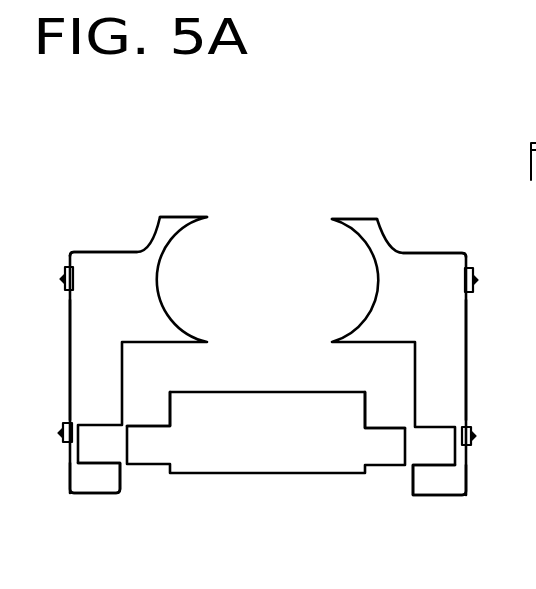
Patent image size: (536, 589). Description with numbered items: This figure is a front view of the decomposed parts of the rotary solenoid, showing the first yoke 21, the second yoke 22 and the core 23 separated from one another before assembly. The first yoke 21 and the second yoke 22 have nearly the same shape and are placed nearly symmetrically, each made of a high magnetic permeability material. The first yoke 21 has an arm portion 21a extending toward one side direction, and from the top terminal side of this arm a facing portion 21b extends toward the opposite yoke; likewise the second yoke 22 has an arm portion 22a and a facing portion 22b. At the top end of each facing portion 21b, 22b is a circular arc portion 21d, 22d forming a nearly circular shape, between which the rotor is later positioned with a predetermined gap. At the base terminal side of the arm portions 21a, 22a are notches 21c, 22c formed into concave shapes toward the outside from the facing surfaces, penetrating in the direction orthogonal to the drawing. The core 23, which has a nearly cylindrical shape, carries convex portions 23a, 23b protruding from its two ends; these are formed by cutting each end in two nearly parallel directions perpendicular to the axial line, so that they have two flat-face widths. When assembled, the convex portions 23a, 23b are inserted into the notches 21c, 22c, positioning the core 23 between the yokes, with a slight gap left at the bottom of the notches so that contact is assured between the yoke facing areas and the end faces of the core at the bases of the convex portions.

The first yoke 21 is at (468, 342).
The arm portion 21a is at (468, 375).
The facing portion 21b is at (425, 254).
The notch 21c is at (431, 465).
The circular arc portion 21d is at (350, 216).
The second yoke 22 is at (72, 340).
The arm portion 22a is at (72, 372).
The facing portion 22b is at (97, 252).
The notch 22c is at (80, 463).
The circular arc portion 22d is at (182, 217).
The core 23 is at (250, 474).
The convex portion 23a is at (385, 428).
The convex portion 23b is at (137, 430).